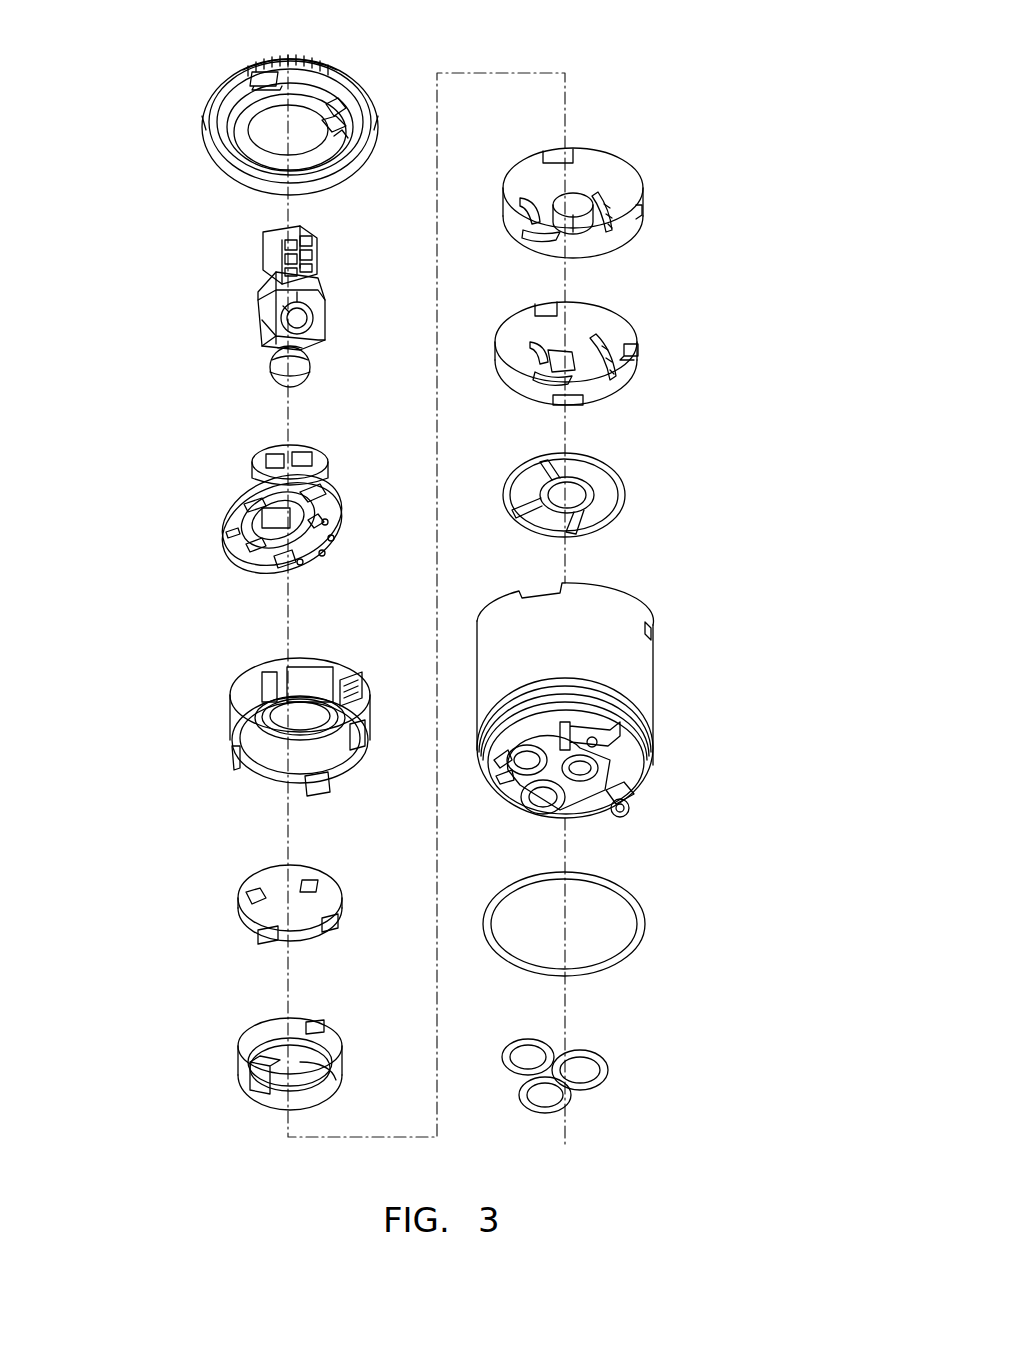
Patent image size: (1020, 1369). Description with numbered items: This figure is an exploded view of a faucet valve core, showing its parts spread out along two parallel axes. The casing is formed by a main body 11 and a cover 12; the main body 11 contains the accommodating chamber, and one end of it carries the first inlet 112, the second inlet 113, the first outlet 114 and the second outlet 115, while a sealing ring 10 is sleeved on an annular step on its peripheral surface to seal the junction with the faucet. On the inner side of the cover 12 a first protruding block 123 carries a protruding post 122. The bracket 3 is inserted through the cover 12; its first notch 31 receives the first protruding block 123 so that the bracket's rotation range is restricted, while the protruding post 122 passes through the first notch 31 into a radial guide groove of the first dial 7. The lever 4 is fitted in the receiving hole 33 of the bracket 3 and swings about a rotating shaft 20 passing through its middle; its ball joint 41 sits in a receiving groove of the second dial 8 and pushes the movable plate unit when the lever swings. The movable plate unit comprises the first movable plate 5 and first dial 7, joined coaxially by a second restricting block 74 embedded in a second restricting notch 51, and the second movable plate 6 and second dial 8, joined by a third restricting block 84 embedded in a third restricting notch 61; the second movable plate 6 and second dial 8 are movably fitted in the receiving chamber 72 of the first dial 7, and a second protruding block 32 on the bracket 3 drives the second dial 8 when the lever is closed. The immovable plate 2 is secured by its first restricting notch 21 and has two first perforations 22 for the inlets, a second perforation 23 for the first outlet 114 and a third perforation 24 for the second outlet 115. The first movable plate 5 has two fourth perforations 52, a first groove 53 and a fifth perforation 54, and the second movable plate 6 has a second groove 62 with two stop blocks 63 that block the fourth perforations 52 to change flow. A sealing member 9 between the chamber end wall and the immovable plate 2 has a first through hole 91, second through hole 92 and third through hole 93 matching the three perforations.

The immovable plate 2 is at (628, 362).
The first restricting notch 21 is at (636, 350).
The first perforations 22 is at (536, 376).
The second perforation 23 is at (542, 330).
The third perforation 24 is at (610, 392).
The bracket 3 is at (232, 497).
The first notch 31 is at (340, 514).
The second protruding block 32 is at (316, 538).
The receiving hole 33 is at (260, 562).
The lever 4 is at (262, 300).
The rotating shaft 20 is at (325, 302).
The ball joint 41 is at (306, 376).
The first movable plate 5 is at (625, 212).
The second restricting notch 51 is at (548, 156).
The fourth perforations 52 is at (530, 234).
The first groove 53 is at (600, 246).
The fifth perforation 54 is at (600, 192).
The second movable plate 6 is at (240, 1055).
The third restricting notch 61 is at (322, 1026).
The second groove 62 is at (332, 1086).
The stop blocks 63 is at (262, 1095).
The first dial 7 is at (250, 720).
The receiving chamber 72 is at (335, 792).
The second restricting block 74 is at (232, 770).
The second dial 8 is at (240, 915).
The third restricting block 84 is at (262, 948).
The sealing member 9 is at (626, 504).
The first through hole 91 is at (512, 512).
The second through hole 92 is at (546, 462).
The third through hole 93 is at (590, 528).
The sealing ring 10 is at (644, 930).
The main body 11 is at (640, 620).
The first inlet 112 is at (543, 797).
The second inlet 113 is at (528, 760).
The first outlet 114 is at (624, 812).
The second outlet 115 is at (605, 748).
The cover 12 is at (205, 118).
The protruding post 122 is at (346, 158).
The first protruding block 123 is at (335, 88).